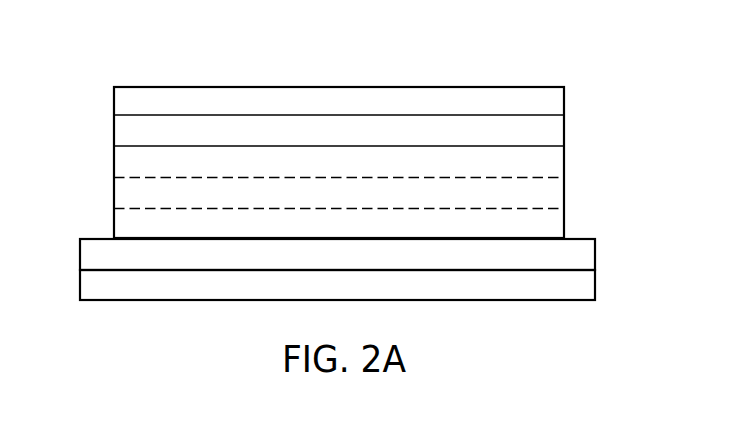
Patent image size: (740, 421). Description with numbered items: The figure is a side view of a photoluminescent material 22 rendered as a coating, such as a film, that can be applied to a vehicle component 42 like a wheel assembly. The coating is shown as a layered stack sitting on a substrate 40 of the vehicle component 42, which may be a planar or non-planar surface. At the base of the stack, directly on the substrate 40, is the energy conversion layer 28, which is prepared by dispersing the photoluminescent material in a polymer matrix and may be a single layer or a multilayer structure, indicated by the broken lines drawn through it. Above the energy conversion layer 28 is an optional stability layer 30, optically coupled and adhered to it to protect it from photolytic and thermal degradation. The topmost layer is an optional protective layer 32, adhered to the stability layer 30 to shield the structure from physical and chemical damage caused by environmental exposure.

The photoluminescent material 22 is at (458, 52).
The energy conversion layer 28 is at (113, 190).
The stability layer 30 is at (113, 129).
The protective layer 32 is at (153, 86).
The substrate 40 is at (590, 253).
The vehicle component 42 is at (590, 285).